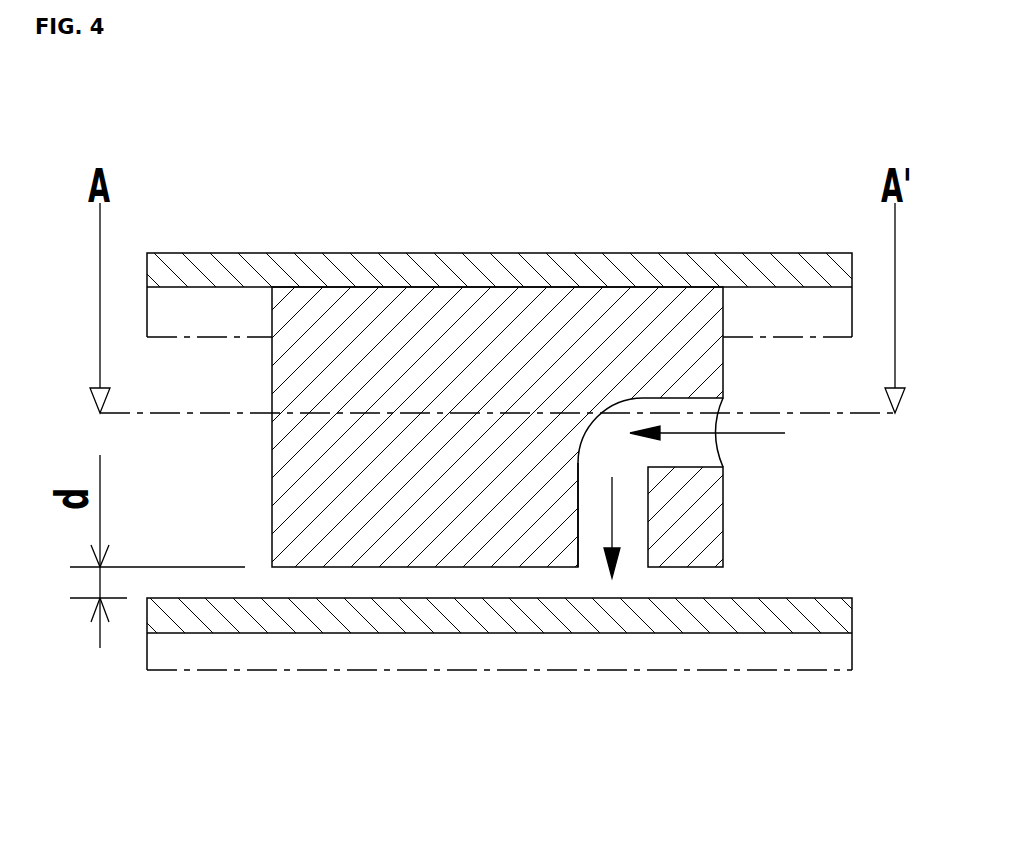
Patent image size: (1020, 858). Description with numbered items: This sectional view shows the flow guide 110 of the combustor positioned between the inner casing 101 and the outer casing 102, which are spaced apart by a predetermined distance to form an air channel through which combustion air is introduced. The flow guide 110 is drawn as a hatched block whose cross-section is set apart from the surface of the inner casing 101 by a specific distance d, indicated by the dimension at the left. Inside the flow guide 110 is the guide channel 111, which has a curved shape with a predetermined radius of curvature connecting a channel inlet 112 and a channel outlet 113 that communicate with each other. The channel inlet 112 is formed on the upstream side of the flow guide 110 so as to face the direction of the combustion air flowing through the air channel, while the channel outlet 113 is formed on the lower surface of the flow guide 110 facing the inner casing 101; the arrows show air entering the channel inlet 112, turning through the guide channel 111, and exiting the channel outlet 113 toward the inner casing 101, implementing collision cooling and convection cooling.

The inner casing 101 is at (815, 625).
The outer casing 102 is at (797, 263).
The flow guide 110 is at (510, 330).
The guide channel 111 is at (593, 480).
The channel inlet 112 is at (703, 450).
The channel outlet 113 is at (637, 548).